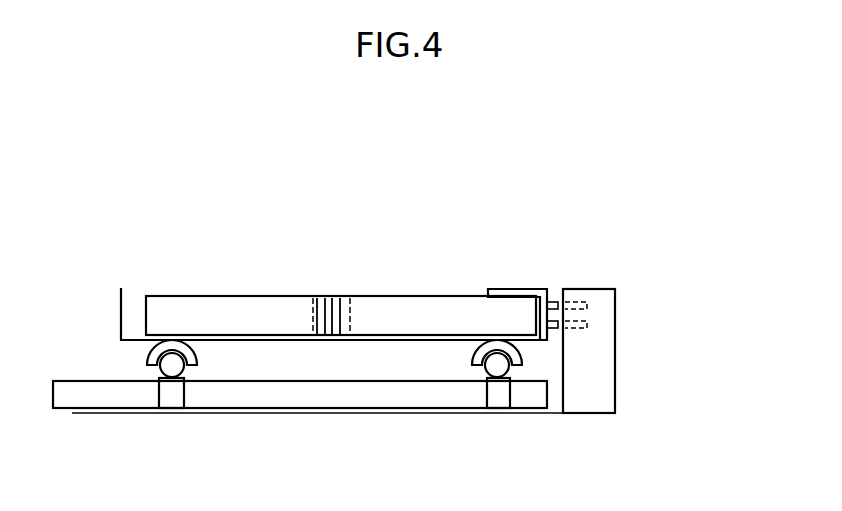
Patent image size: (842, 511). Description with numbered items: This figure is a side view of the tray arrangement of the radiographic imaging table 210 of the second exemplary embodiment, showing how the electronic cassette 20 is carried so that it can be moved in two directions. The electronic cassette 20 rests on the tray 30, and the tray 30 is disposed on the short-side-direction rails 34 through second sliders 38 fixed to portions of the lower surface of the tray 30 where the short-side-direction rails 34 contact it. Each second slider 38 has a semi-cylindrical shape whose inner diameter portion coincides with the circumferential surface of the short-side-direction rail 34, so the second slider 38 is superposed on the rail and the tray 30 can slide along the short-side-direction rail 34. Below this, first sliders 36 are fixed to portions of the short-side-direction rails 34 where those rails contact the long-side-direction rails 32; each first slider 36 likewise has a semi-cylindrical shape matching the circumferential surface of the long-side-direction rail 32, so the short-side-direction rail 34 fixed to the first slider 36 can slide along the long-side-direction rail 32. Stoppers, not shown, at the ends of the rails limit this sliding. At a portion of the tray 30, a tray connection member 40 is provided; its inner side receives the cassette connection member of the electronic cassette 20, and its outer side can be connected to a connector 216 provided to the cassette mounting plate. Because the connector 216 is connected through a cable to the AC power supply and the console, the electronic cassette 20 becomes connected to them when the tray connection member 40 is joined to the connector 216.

The radiographic imaging table 210 is at (703, 188).
The electronic cassette 20 is at (298, 297).
The tray 30 is at (121, 313).
The long-side-direction rail 32 is at (100, 398).
The short-side-direction rail 34 is at (172, 365).
The first slider 36 is at (172, 392).
The second slider 38 is at (190, 358).
The tray connection member 40 is at (507, 291).
The connector 216 is at (598, 307).